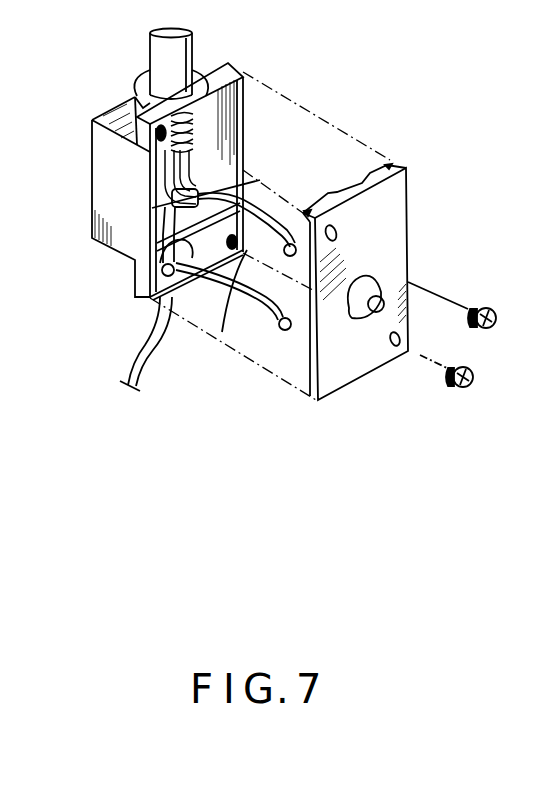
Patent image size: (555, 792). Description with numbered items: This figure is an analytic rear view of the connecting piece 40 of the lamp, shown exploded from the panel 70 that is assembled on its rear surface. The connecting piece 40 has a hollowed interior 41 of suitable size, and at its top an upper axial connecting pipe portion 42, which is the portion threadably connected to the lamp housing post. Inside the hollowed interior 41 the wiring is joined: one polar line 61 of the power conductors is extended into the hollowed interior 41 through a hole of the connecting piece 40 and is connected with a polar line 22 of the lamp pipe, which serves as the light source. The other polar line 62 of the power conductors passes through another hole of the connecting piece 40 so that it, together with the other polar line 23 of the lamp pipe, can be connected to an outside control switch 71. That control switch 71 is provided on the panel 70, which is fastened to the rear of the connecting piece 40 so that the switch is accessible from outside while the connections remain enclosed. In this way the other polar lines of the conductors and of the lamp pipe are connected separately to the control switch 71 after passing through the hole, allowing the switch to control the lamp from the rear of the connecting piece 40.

The connecting piece 40 is at (122, 238).
The hollowed interior 41 is at (208, 132).
The upper axial connecting pipe portion 42 is at (137, 100).
The polar line of the lamp pipe 22 is at (157, 168).
The other polar line of the lamp pipe 23 is at (264, 222).
The polar line of the power conductors 61 is at (160, 223).
The other polar line of the power conductors 62 is at (237, 290).
The panel 70 is at (397, 217).
The control switch 71 is at (362, 313).